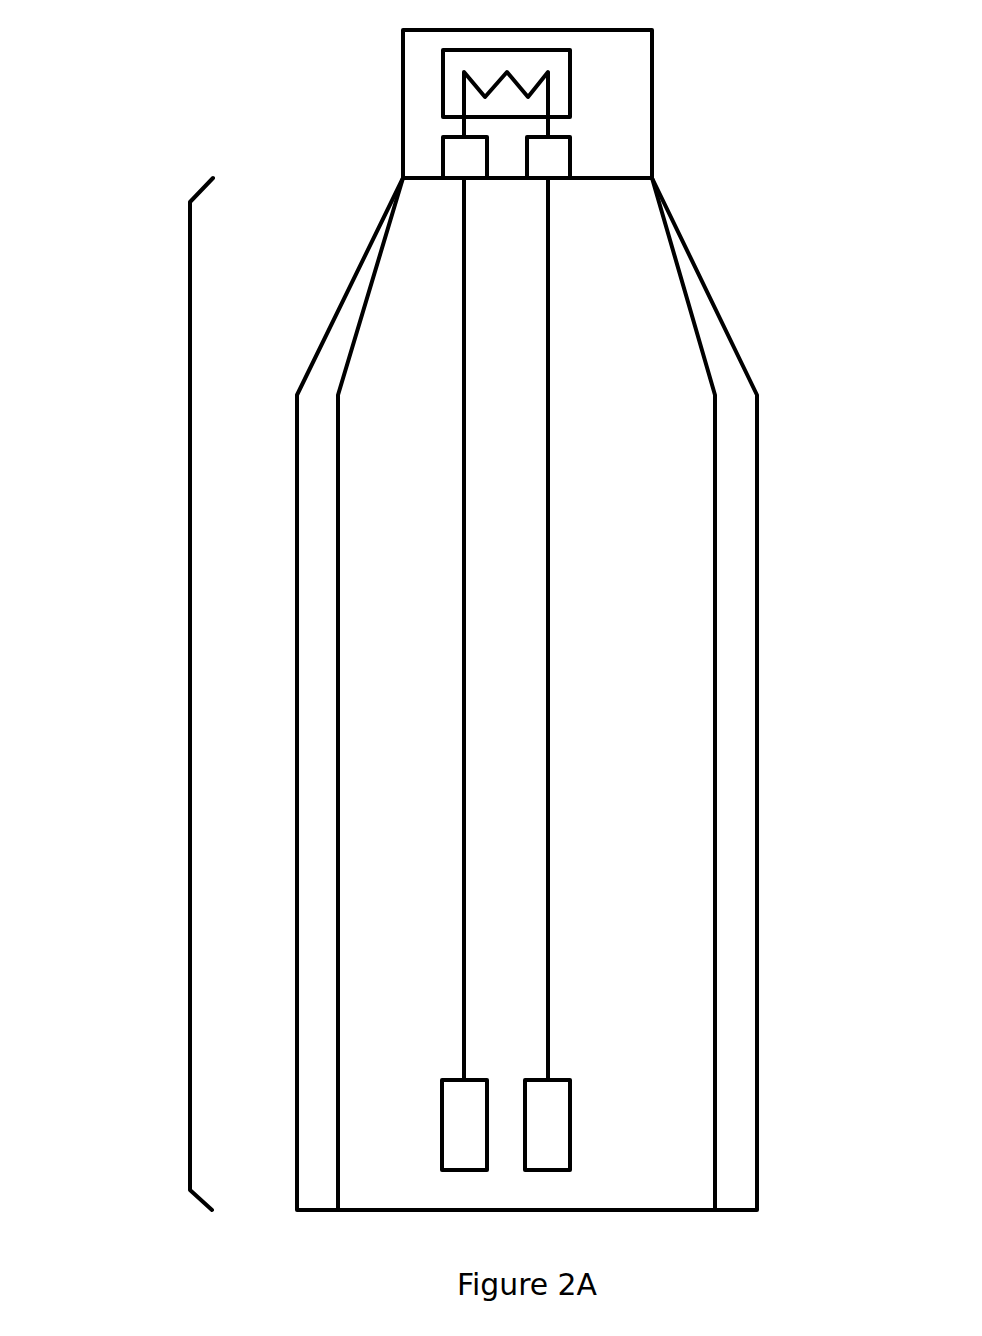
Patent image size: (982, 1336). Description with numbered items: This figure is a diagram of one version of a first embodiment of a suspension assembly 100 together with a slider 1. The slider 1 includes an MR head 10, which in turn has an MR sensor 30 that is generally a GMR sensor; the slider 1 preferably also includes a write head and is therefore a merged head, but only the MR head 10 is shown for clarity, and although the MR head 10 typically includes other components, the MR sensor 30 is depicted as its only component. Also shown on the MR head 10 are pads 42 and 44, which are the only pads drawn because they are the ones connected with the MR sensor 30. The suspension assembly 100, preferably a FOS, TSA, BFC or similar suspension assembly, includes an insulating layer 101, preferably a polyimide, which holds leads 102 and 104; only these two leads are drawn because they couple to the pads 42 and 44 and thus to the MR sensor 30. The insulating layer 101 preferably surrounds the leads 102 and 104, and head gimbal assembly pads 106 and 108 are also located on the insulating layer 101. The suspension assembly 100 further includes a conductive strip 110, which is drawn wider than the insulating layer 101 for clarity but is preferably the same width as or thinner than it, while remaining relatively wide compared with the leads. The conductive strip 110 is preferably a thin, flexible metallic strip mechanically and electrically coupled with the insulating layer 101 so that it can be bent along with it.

The slider 1 is at (655, 65).
The MR head 10 is at (528, 48).
The MR sensor 30 is at (443, 93).
The pad 42 is at (443, 158).
The pad 44 is at (570, 157).
The suspension assembly 100 is at (190, 695).
The insulating layer 101 is at (715, 652).
The lead 102 is at (464, 673).
The lead 104 is at (548, 545).
The head gimbal assembly pad 106 is at (442, 1125).
The head gimbal assembly pad 108 is at (525, 1078).
The conductive strip 110 is at (297, 415).